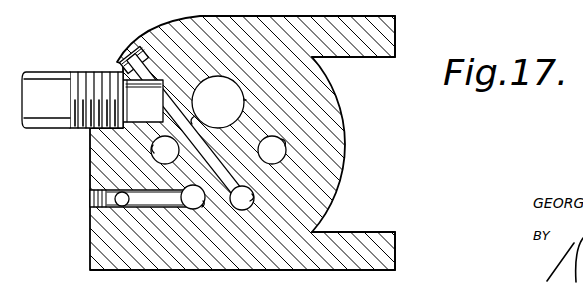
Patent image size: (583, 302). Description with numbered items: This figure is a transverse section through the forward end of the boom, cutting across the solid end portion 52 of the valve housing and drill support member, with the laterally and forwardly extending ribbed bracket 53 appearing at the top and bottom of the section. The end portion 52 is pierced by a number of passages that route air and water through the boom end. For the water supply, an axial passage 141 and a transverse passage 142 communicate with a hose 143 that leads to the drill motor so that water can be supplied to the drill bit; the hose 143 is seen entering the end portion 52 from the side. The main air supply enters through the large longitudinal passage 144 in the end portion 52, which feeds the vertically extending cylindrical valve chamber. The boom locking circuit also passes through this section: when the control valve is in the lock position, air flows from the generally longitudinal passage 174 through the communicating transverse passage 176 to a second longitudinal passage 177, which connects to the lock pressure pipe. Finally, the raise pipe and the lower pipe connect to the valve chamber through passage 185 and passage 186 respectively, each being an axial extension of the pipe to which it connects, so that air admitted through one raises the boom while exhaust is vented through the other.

The solid end portion 52 is at (326, 165).
The ribbed bracket 53 is at (411, 248).
The axial passage 141 is at (253, 197).
The transverse passage 142 is at (191, 120).
The hose 143 is at (40, 78).
The longitudinal passage 144 is at (245, 100).
The longitudinal passage 174 is at (118, 207).
The transverse passage 176 is at (137, 201).
The second longitudinal passage 177 is at (194, 207).
The passage 185 is at (152, 151).
The passage 186 is at (285, 144).